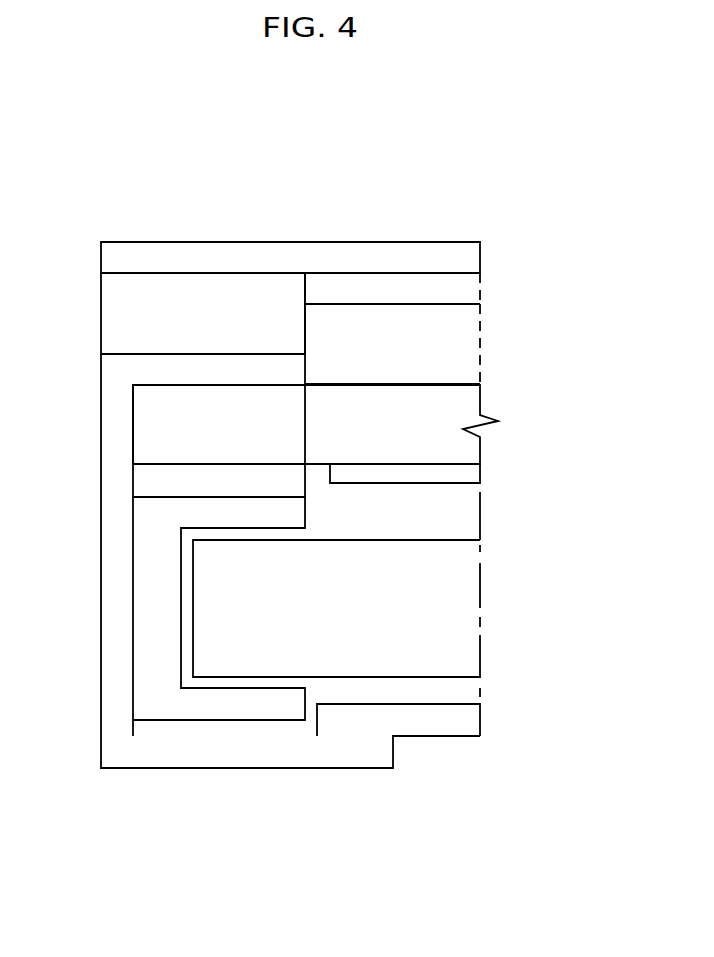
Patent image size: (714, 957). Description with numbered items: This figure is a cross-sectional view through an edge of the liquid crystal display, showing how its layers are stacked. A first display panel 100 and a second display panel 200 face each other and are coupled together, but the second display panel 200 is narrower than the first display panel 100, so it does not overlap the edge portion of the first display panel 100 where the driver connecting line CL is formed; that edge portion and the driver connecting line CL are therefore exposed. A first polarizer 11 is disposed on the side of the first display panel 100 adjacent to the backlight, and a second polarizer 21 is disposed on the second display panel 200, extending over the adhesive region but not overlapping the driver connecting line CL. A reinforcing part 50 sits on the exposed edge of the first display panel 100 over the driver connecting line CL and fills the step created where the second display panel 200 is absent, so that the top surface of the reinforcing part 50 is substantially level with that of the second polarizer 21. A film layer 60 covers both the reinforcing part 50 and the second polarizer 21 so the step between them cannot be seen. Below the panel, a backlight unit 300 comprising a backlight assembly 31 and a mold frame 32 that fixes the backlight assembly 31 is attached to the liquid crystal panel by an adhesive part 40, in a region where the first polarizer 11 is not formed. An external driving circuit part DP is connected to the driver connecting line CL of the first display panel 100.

The film layer 60 is at (118, 254).
The reinforcing part 50 is at (118, 327).
The second polarizer 21 is at (462, 287).
The second display panel 200 is at (457, 342).
The first display panel 100 is at (147, 424).
The adhesive part 40 is at (148, 481).
The first polarizer 11 is at (473, 475).
The driver connecting line CL is at (117, 608).
The mold frame 32 is at (277, 703).
The backlight assembly 31 is at (365, 640).
The driving circuit part DP is at (452, 723).
The backlight unit 300 is at (385, 832).